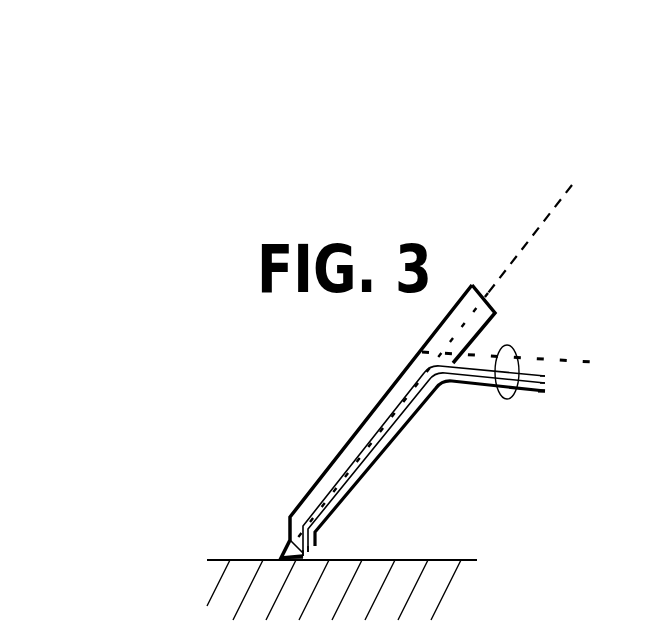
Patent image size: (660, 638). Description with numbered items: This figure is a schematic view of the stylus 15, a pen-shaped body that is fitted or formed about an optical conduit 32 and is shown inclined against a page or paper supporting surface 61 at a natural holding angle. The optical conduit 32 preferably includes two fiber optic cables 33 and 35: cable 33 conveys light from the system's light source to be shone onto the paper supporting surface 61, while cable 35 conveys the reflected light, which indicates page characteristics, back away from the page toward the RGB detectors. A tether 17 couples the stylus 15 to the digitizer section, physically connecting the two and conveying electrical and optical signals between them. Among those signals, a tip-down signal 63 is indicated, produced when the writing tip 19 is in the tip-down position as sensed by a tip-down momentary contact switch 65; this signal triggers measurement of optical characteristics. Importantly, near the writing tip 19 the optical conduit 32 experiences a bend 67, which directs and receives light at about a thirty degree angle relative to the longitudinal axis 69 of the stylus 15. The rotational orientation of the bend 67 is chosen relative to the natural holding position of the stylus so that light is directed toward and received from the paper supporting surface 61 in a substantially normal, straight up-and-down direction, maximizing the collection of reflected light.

The stylus 15 is at (508, 313).
The tether 17 is at (511, 398).
The writing tip 19 is at (263, 546).
The optical conduit 32 is at (562, 407).
The fiber optic cable 33 is at (467, 386).
The fiber optic cable 35 is at (545, 378).
The paper supporting surface 61 is at (405, 559).
The tip-down signal 63 is at (543, 355).
The tip-down momentary contact switch 65 is at (296, 548).
The bend 67 is at (339, 535).
The longitudinal axis 69 is at (533, 243).